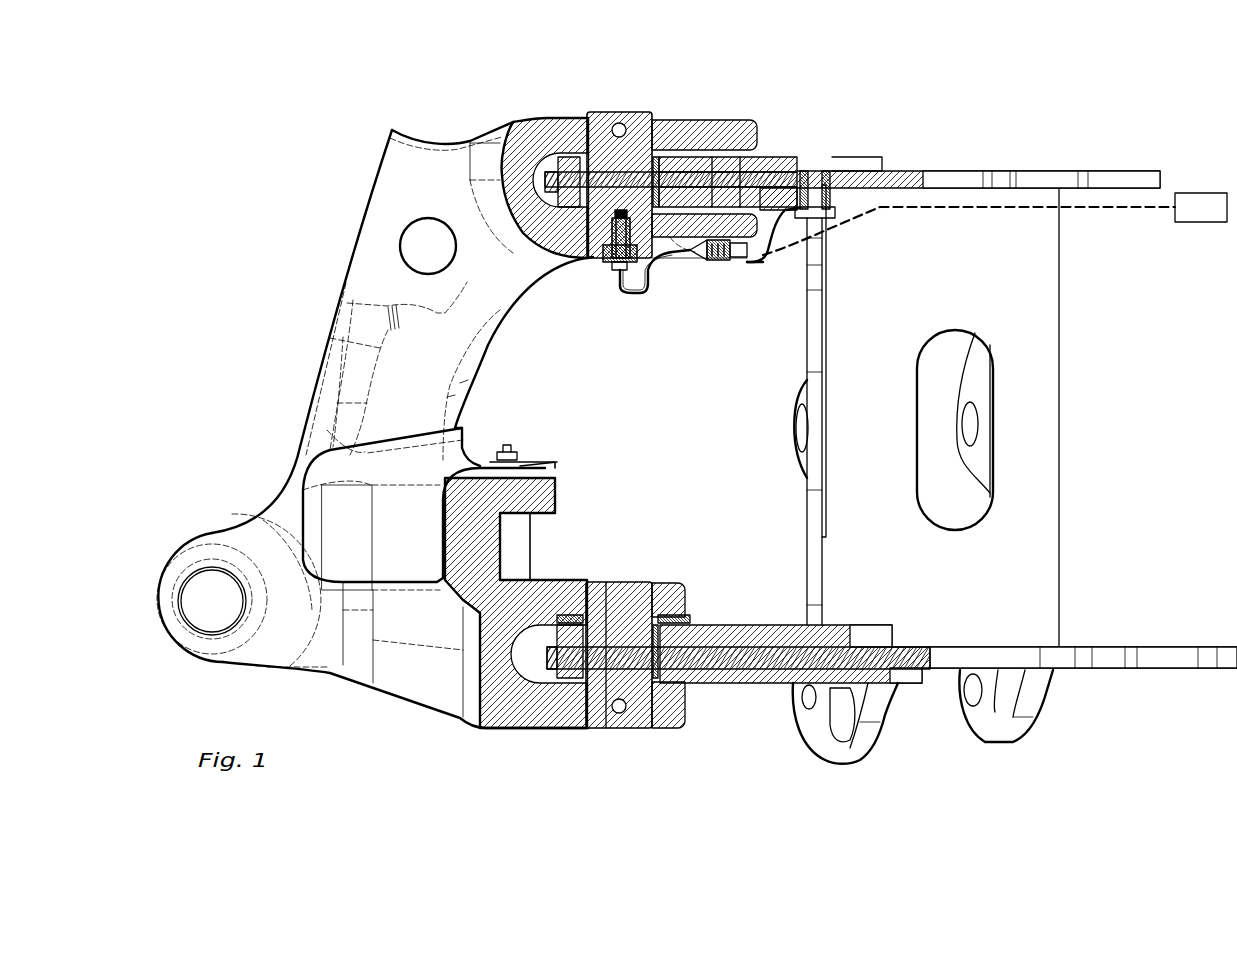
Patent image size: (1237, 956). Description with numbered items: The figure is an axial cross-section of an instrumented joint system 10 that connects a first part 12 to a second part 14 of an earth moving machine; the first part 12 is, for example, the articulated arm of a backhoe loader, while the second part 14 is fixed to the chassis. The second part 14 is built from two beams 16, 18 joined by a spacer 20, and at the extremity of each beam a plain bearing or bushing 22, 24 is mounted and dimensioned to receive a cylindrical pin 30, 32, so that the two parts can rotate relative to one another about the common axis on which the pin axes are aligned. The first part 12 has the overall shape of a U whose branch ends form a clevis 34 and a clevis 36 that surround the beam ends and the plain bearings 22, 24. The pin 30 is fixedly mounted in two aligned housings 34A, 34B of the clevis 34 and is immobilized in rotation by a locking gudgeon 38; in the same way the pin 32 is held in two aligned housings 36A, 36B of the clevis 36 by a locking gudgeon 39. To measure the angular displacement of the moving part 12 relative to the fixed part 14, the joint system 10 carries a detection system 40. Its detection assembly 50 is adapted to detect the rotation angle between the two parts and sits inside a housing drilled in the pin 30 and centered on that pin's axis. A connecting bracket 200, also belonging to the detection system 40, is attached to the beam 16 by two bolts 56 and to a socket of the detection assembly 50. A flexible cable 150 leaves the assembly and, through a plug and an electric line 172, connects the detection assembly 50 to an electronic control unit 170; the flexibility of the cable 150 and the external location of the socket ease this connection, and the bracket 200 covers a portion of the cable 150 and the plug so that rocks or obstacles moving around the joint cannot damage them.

The instrumented joint system 10 is at (340, 163).
The first part 12 is at (330, 338).
The second part 14 is at (1060, 171).
The beam 16 is at (905, 165).
The beam 18 is at (960, 668).
The spacer 20 is at (1030, 272).
The plain bearing 22 is at (657, 143).
The plain bearing 24 is at (672, 683).
The pin 30 is at (602, 125).
The pin 32 is at (598, 730).
The clevis 34 is at (500, 150).
The housing 34A is at (653, 114).
The housing 34B is at (672, 168).
The clevis 36 is at (515, 708).
The housing 36A is at (652, 730).
The housing 36B is at (655, 580).
The locking gudgeon 38 is at (611, 113).
The locking gudgeon 39 is at (610, 730).
The detection system 40 is at (546, 334).
The detection assembly 50 is at (603, 270).
The bolts 56 is at (822, 215).
The flexible cable 150 is at (640, 298).
The electronic control unit 170 is at (1201, 207).
The electric line 172 is at (1090, 210).
The connecting bracket 200 is at (640, 295).